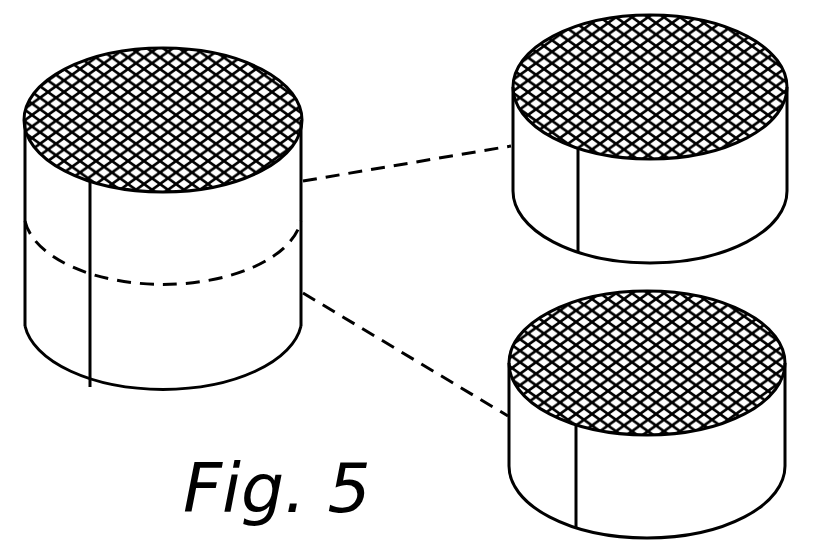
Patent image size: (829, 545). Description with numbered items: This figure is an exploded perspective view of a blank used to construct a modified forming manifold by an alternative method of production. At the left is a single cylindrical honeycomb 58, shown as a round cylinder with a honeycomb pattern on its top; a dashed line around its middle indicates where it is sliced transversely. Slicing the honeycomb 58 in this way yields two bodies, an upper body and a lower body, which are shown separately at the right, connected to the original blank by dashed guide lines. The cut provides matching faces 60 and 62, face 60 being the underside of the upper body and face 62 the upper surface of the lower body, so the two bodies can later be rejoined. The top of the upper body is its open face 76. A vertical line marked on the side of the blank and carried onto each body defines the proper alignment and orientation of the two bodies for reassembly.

The cylindrical honeycomb 58 is at (312, 68).
The matching face 60 is at (533, 232).
The matching face 62 is at (560, 333).
The open face 76 is at (590, 58).